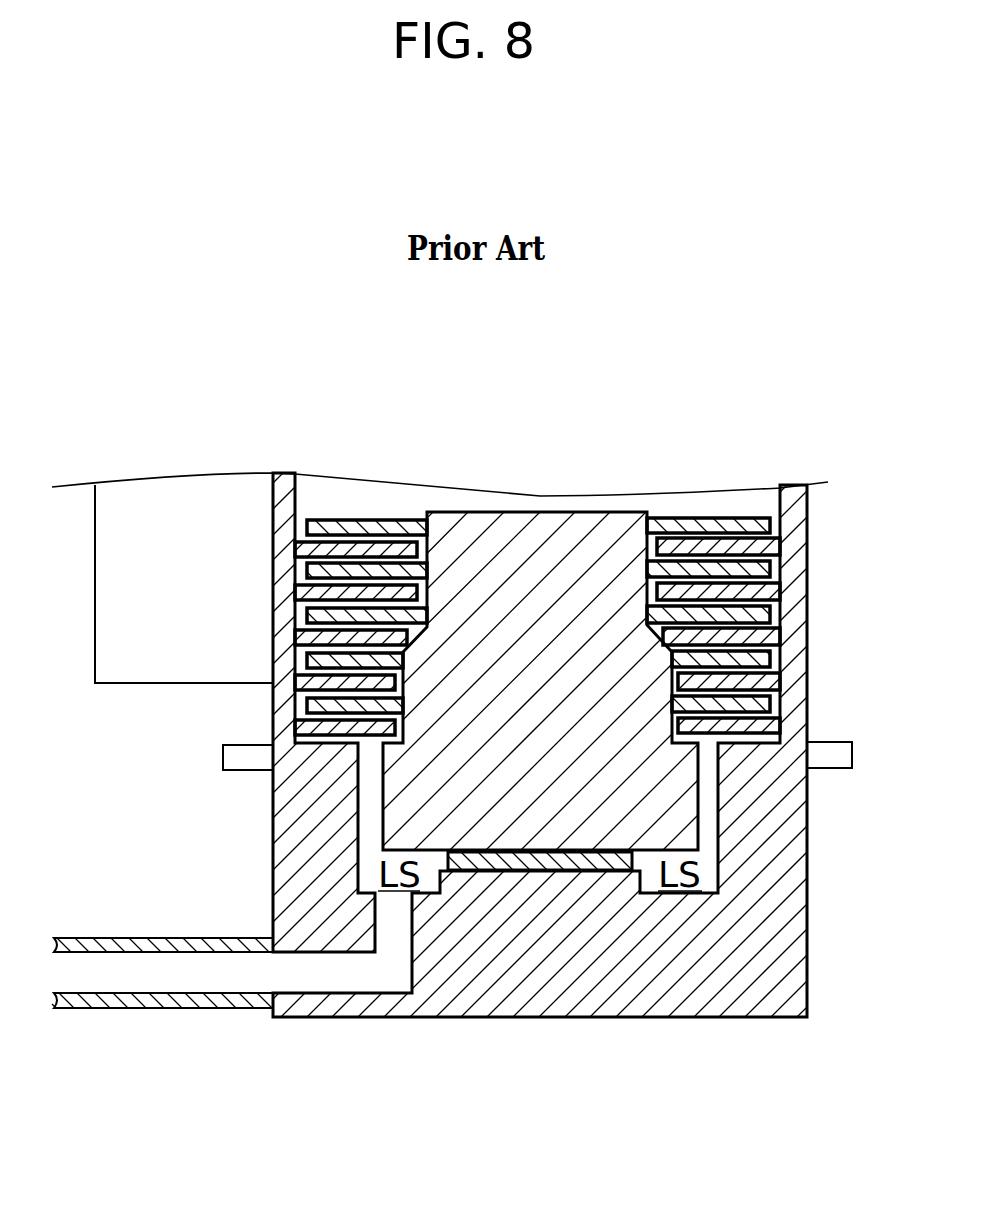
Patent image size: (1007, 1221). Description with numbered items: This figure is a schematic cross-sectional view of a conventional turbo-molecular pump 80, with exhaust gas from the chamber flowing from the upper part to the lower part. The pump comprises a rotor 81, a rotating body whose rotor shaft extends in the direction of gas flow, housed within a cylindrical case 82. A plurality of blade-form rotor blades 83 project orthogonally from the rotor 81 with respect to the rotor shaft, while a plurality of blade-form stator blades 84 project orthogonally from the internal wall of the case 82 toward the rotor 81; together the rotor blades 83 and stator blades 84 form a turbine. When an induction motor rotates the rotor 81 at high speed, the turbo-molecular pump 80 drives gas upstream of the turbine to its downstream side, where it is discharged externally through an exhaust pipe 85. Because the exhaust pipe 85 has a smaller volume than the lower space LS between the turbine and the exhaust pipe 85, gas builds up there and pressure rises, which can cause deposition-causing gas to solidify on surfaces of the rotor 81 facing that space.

The turbo-molecular pump 80 is at (492, 370).
The rotor 81 is at (565, 512).
The case 82 is at (810, 670).
The rotor blades 83 is at (394, 520).
The stator blades 84 is at (302, 548).
The exhaust pipe 85 is at (125, 1008).